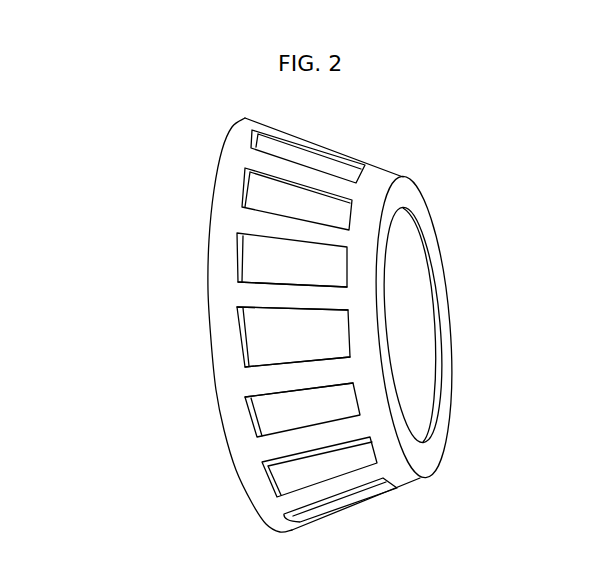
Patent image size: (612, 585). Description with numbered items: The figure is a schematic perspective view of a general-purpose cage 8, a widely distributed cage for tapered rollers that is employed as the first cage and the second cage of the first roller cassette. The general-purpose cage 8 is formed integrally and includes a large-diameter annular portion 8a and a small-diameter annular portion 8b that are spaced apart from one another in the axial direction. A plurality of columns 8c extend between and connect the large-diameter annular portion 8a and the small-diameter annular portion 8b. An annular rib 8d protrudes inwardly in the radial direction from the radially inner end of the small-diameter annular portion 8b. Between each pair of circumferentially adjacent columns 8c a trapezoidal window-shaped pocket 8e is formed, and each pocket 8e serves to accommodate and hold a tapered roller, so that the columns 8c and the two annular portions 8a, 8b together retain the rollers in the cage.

The general-purpose cage 8 is at (212, 139).
The large-diameter annular portion 8a is at (258, 477).
The small-diameter annular portion 8b is at (375, 400).
The column 8c is at (270, 294).
The annular rib 8d is at (407, 192).
The pocket 8e is at (258, 258).